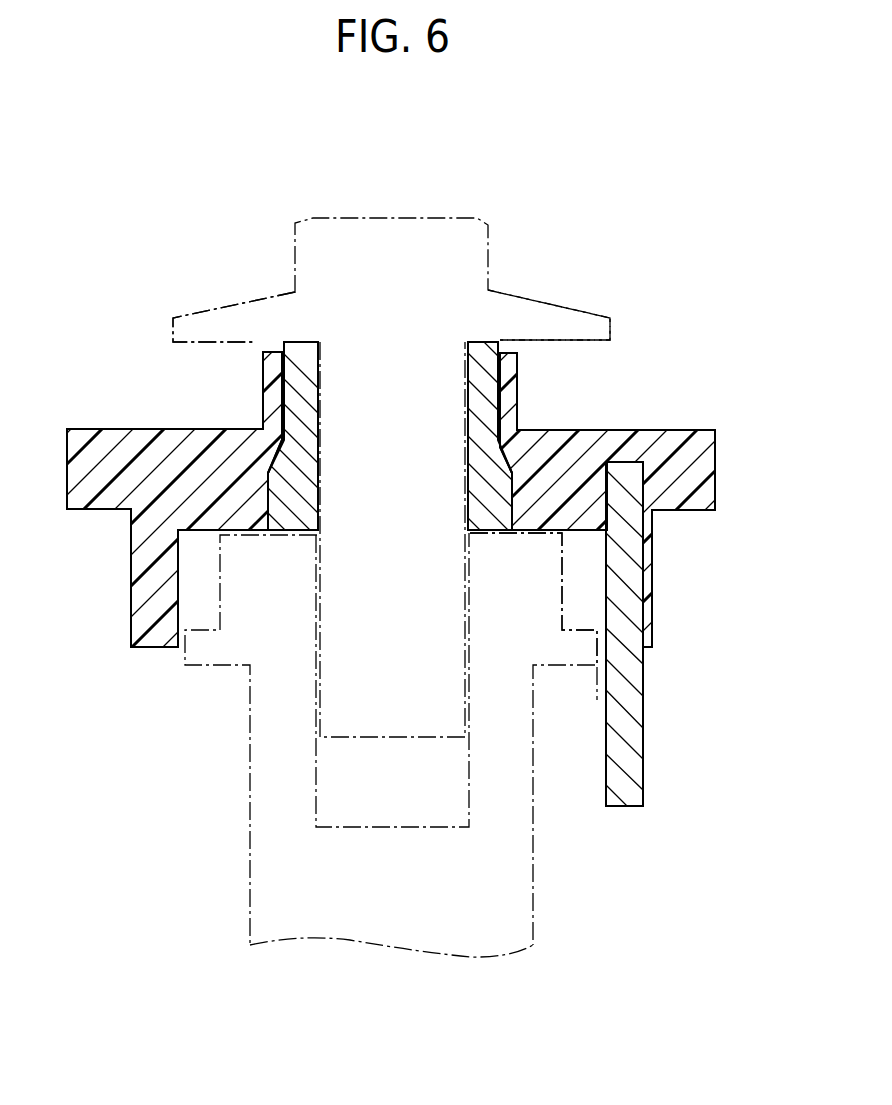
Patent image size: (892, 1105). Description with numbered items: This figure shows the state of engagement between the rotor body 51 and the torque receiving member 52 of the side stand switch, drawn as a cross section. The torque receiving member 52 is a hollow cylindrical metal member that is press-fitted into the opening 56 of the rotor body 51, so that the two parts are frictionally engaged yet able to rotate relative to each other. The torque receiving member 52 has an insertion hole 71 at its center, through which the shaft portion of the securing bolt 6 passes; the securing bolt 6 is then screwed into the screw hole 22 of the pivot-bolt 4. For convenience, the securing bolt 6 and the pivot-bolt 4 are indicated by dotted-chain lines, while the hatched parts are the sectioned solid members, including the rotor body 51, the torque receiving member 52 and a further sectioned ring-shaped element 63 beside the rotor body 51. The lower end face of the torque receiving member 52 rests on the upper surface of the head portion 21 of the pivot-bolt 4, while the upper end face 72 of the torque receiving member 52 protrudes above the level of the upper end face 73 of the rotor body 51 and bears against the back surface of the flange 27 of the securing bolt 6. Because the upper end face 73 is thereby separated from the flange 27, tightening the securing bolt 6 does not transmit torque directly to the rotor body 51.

The pivot-bolt 4 is at (535, 917).
The securing bolt 6 is at (455, 217).
The head portion 21 is at (562, 593).
The screw hole 22 is at (316, 764).
The flange 27 is at (557, 300).
The rotor body 51 is at (680, 438).
The torque receiving member 52 is at (490, 387).
The opening 56 is at (282, 401).
The ring member 63 is at (630, 748).
The insertion hole 71 is at (318, 387).
The upper end face 72 is at (300, 340).
The upper end face 73 is at (270, 350).